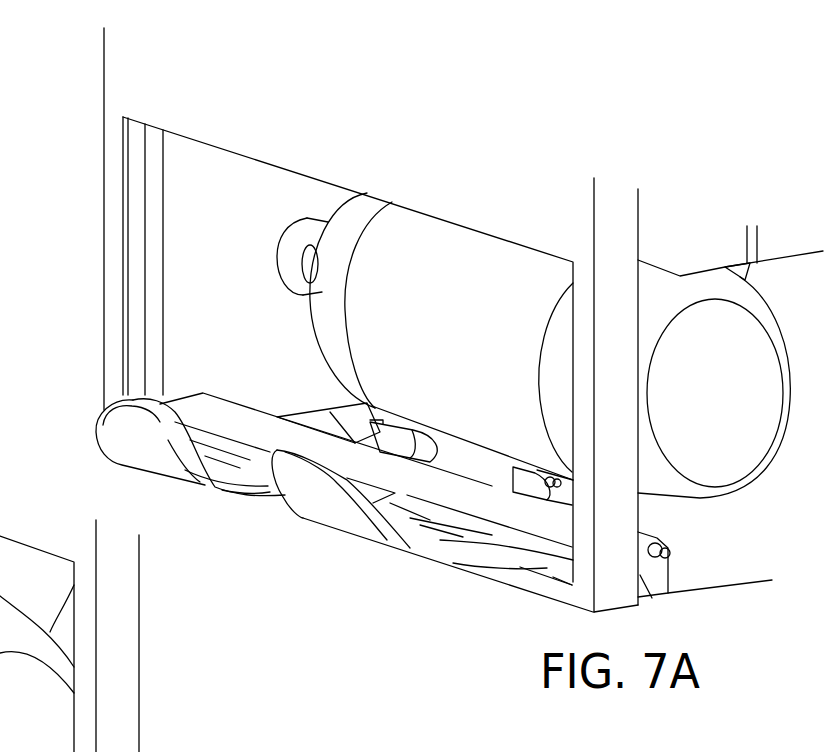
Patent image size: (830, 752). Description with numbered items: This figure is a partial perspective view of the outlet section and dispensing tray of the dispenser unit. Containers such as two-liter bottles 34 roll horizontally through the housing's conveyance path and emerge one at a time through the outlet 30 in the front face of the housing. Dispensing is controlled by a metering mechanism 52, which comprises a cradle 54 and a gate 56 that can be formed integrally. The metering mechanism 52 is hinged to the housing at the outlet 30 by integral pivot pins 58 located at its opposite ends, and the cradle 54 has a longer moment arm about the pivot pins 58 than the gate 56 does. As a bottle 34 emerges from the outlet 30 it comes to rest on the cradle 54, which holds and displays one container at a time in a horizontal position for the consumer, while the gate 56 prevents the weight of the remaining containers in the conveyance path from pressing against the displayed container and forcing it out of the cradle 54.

The outlet 30 is at (127, 177).
The two-liter bottle 34 is at (475, 352).
The metering mechanism 52 is at (290, 461).
The cradle 54 is at (100, 408).
The gate 56 is at (365, 404).
The pivot pins 58 is at (660, 575).